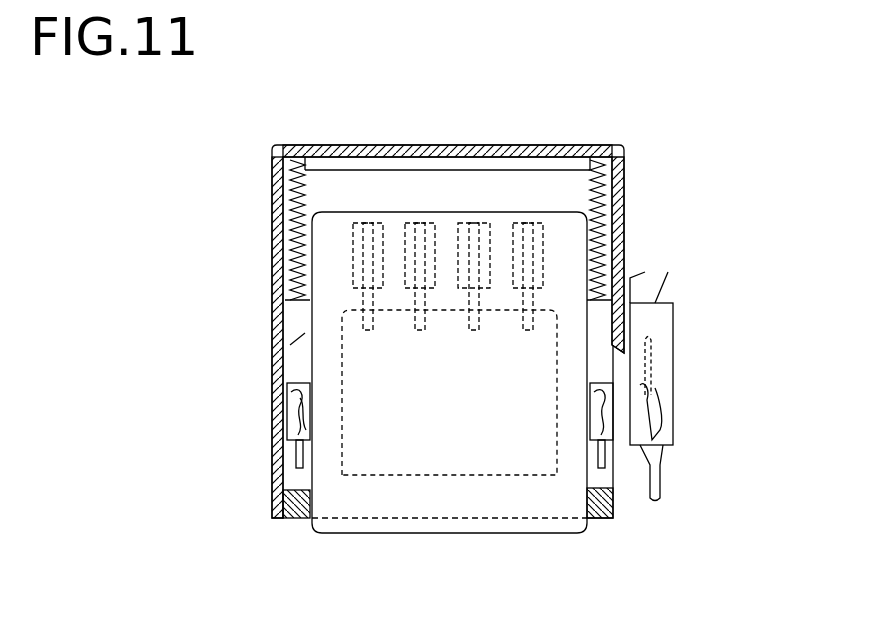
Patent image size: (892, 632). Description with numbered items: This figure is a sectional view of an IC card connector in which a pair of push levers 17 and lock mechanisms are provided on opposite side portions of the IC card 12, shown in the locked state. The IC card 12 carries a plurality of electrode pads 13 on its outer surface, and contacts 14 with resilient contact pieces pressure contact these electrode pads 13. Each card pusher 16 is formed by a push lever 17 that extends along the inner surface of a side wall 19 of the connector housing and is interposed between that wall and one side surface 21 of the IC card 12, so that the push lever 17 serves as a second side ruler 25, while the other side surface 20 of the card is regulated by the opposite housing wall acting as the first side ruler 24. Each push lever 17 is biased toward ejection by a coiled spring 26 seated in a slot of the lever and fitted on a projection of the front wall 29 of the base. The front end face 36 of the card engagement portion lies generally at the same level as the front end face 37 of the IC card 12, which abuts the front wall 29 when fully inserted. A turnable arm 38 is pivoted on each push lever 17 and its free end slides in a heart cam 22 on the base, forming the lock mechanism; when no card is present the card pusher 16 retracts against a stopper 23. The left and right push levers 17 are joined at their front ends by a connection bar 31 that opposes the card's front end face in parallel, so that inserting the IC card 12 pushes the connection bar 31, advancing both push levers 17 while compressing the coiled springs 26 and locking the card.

The IC card 12 is at (437, 530).
The electrode pads 13 is at (358, 248).
The contacts 14 is at (367, 302).
The card pusher 16 is at (590, 146).
The push lever 17 is at (290, 345).
The side wall 19 is at (622, 222).
The other side surface 20 is at (290, 383).
The one side surface 21 is at (590, 330).
The heart cam 22 is at (300, 447).
The stopper 23 is at (613, 512).
The first side ruler 24 is at (285, 295).
The second side ruler 25 is at (651, 402).
The coiled spring 26 is at (272, 176).
The front wall 29 is at (345, 147).
The connection bar 31 is at (475, 190).
The front end face 36 is at (530, 170).
The front end face 37 is at (420, 212).
The turnable arm 38 is at (652, 360).